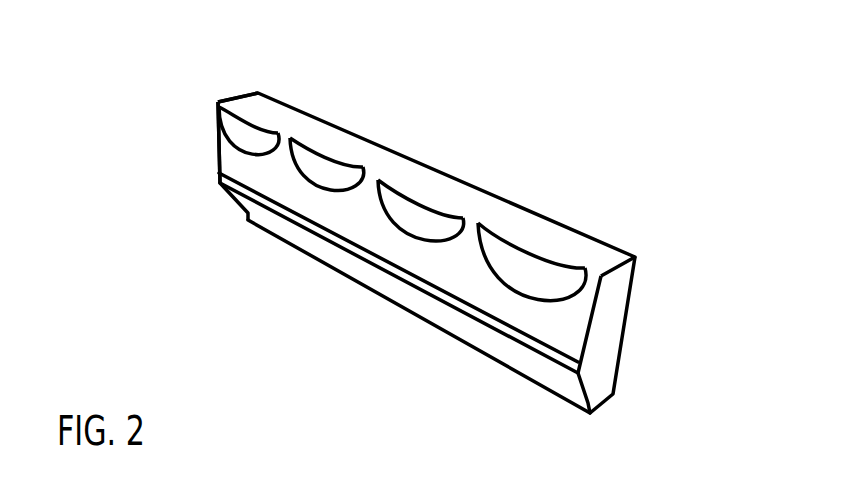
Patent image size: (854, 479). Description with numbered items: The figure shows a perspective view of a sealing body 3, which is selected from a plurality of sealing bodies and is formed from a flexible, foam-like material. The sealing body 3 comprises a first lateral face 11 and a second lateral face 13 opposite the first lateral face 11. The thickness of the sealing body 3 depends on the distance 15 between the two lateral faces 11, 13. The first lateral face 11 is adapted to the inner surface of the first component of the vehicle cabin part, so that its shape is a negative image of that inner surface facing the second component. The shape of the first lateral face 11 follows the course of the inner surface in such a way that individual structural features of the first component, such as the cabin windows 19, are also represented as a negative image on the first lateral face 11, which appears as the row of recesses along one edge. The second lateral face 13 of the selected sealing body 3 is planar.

The sealing body 3 is at (605, 222).
The first lateral face 11 is at (488, 273).
The second lateral face 13 is at (642, 282).
The distance 15 is at (255, 90).
The cabin windows 19 is at (512, 257).